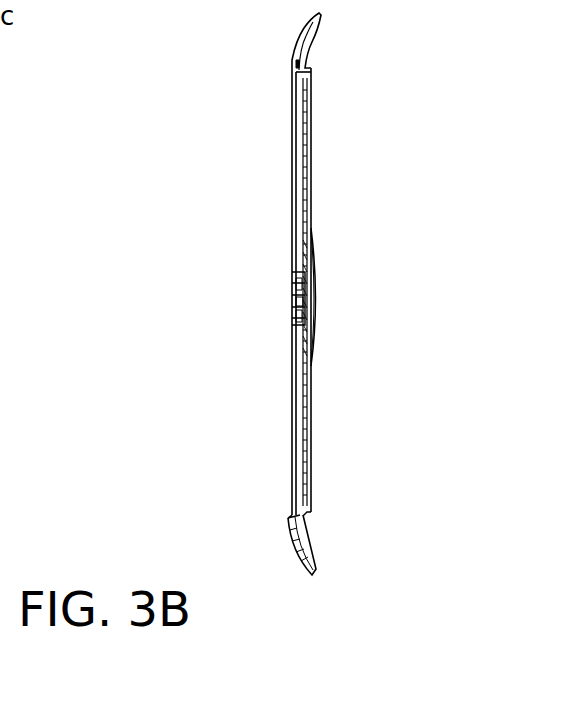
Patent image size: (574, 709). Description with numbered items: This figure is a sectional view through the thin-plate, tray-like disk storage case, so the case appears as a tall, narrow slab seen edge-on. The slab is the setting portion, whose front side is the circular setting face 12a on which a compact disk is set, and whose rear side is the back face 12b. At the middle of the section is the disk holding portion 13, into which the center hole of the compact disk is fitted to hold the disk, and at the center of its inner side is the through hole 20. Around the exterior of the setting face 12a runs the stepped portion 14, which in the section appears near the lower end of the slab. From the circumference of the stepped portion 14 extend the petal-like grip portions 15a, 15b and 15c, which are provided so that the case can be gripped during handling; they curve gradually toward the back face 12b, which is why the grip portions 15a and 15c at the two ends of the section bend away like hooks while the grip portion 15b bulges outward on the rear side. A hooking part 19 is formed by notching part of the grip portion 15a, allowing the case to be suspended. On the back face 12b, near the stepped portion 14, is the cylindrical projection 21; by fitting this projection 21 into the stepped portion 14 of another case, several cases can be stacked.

The setting face 12a is at (296, 408).
The back face 12b is at (305, 456).
The disk holding portion 13 is at (283, 290).
The stepped portion 14 is at (291, 519).
The grip portion 15a is at (300, 32).
The grip portion 15b is at (317, 280).
The grip portion 15c is at (304, 572).
The hooking part 19 is at (296, 63).
The through hole 20 is at (307, 299).
The cylindrical projection 21 is at (309, 511).